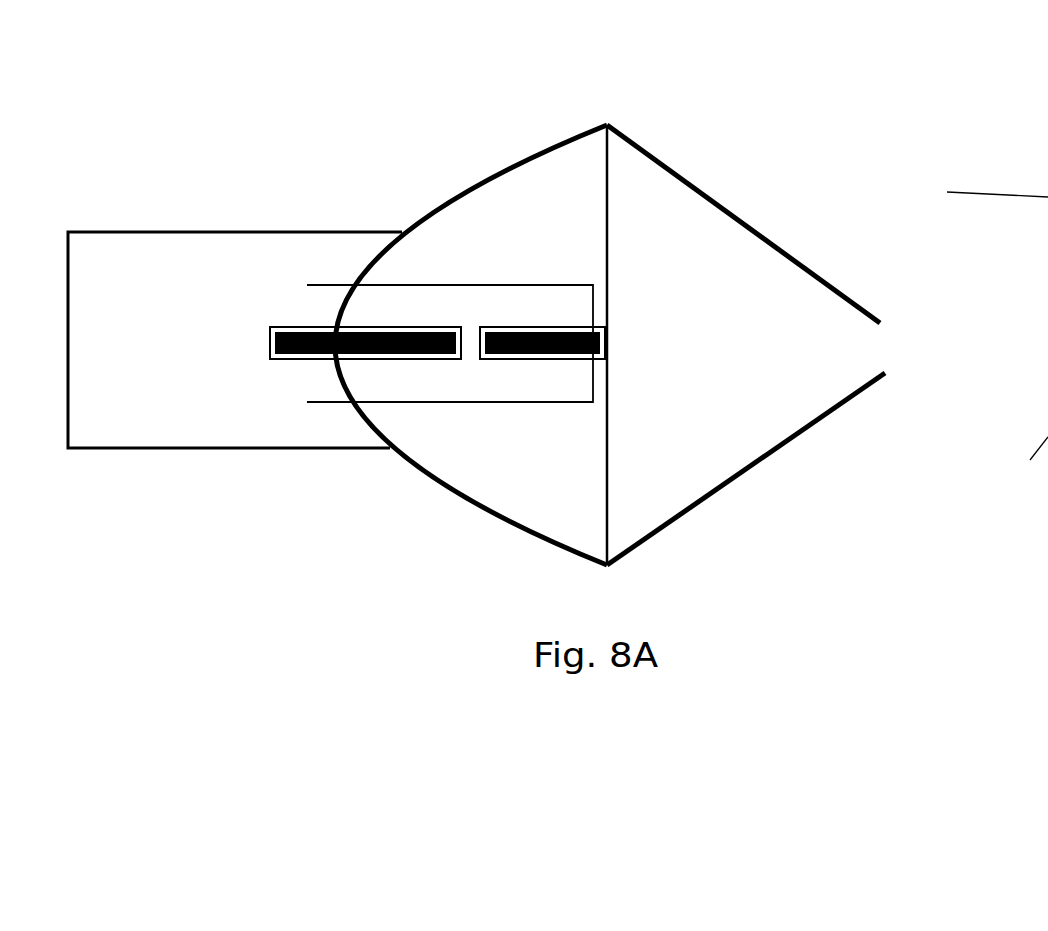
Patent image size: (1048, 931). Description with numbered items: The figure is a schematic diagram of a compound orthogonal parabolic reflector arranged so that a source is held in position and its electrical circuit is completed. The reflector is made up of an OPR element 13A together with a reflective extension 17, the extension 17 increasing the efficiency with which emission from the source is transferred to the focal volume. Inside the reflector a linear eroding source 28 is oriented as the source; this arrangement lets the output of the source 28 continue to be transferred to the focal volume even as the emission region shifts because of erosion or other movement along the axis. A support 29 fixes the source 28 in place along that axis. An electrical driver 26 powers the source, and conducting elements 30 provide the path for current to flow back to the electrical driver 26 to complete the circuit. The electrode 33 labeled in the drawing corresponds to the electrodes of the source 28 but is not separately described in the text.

The electrical driver 26 is at (187, 215).
The linear eroding source 28 is at (474, 310).
The OPR element 13A is at (568, 110).
The support 29 is at (621, 263).
The reflective extension 17 is at (787, 565).
The conducting elements 30 is at (492, 416).
The electrode 33 is at (611, 356).